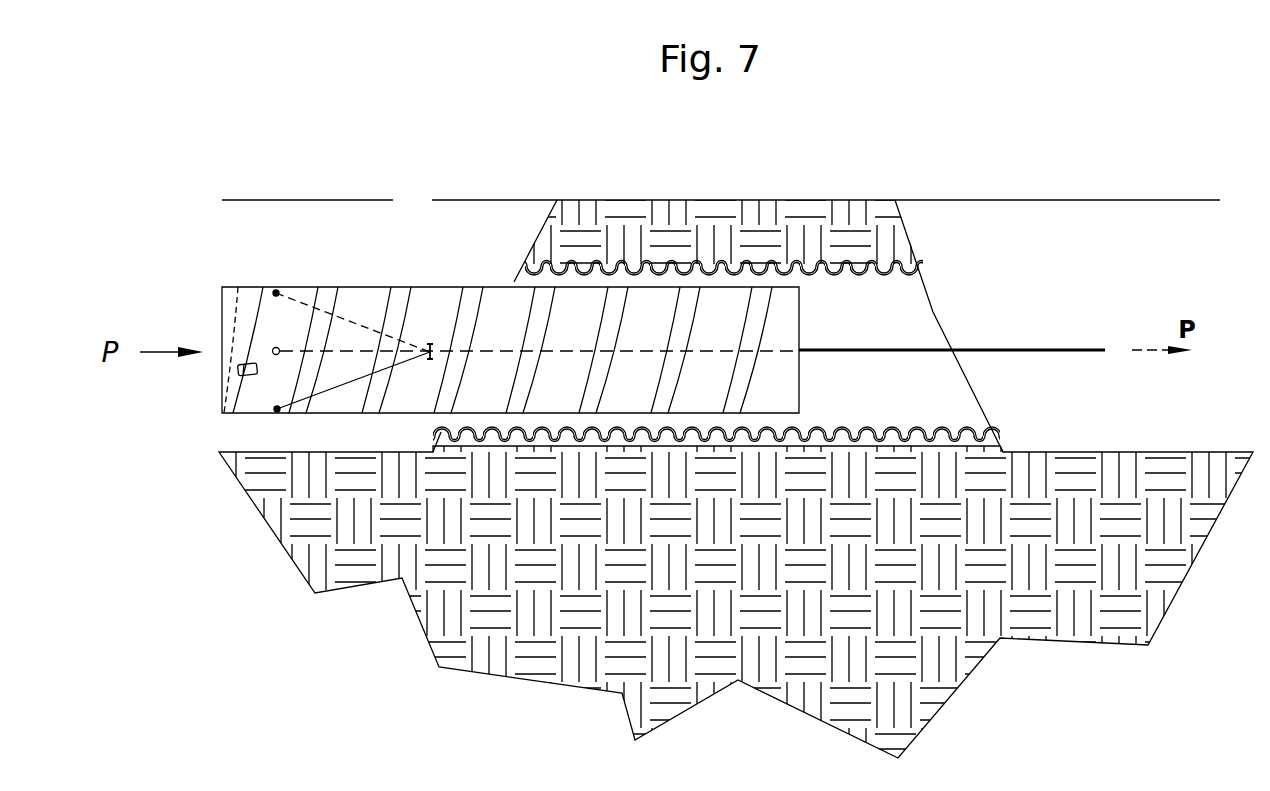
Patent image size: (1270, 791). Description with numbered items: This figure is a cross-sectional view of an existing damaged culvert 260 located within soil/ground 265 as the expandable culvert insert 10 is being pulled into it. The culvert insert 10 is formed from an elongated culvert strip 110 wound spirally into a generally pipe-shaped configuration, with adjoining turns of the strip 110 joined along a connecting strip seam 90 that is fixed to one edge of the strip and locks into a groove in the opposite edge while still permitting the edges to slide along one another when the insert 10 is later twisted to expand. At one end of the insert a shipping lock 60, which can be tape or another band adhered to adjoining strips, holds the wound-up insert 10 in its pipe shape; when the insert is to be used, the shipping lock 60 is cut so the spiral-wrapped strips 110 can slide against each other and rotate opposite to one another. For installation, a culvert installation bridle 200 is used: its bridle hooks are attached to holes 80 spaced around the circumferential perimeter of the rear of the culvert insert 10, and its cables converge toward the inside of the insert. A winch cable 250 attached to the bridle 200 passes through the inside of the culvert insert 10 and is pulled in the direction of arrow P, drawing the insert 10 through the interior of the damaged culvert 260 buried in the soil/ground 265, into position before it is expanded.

The culvert insert 10 is at (415, 215).
The shipping lock 60 is at (237, 370).
The holes 80 is at (276, 291).
The connecting strip seam 90 is at (247, 325).
The elongated culvert strip 110 is at (785, 398).
The culvert installation bridle 200 is at (352, 317).
The winch cable 250 is at (1050, 348).
The damaged culvert 260 is at (935, 312).
The soil/ground 265 is at (858, 217).